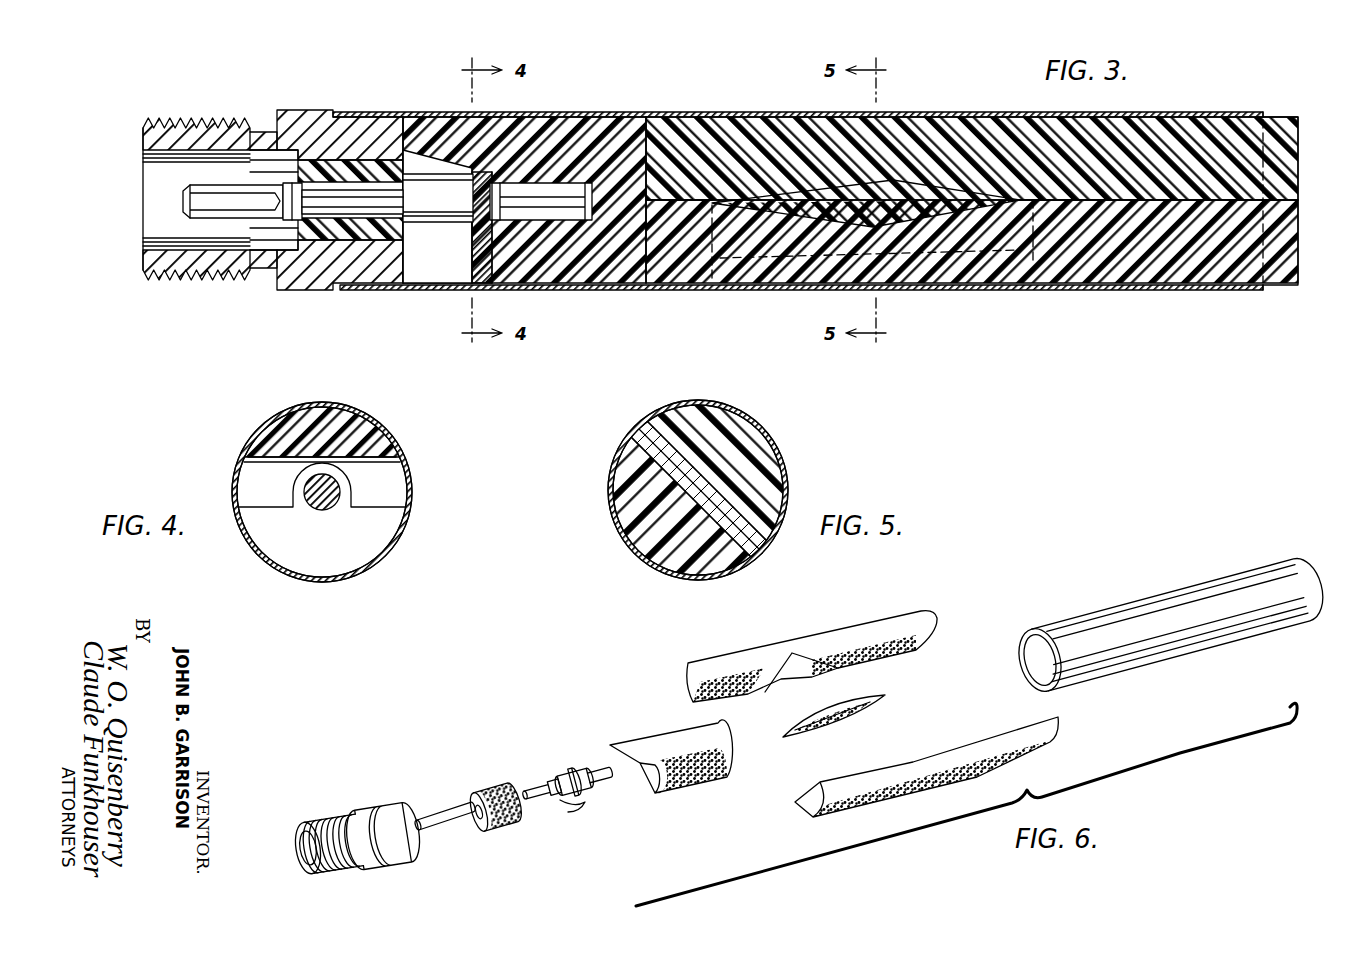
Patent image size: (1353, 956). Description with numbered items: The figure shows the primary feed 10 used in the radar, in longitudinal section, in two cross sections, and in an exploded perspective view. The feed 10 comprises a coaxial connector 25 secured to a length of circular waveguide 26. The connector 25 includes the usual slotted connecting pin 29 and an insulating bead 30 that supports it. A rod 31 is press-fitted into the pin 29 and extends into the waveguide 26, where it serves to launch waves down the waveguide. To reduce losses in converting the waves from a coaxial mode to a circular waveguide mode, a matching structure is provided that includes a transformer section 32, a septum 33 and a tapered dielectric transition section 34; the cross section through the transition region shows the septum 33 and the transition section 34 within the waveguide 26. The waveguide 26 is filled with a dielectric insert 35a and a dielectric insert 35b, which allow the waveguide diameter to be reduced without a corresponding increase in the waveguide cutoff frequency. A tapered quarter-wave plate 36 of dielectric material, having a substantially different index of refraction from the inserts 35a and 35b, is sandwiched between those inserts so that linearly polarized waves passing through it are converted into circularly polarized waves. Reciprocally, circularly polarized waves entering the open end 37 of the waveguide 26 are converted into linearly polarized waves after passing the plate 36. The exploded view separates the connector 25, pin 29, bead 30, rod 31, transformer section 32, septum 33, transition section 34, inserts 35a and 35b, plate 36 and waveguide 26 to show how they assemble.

In FIG. 3, the feed 10 is at (782, 312).
In FIG. 3, the coaxial connector 25 is at (248, 287).
In FIG. 6, the coaxial connector 25 is at (430, 797).
In FIG. 3, the circular waveguide 26 is at (690, 286).
In FIG. 4, the circular waveguide 26 is at (388, 432).
In FIG. 5, the circular waveguide 26 is at (652, 423).
In FIG. 6, the circular waveguide 26 is at (1142, 608).
In FIG. 3, the slotted connecting pin 29 is at (203, 219).
In FIG. 6, the slotted connecting pin 29 is at (458, 825).
In FIG. 3, the insulating bead 30 is at (326, 238).
In FIG. 6, the insulating bead 30 is at (501, 823).
In FIG. 3, the rod 31 is at (393, 195).
In FIG. 6, the rod 31 is at (547, 788).
In FIG. 3, the transformer section 32 is at (445, 214).
In FIG. 6, the transformer section 32 is at (565, 806).
In FIG. 3, the septum 33 is at (475, 266).
In FIG. 4, the septum 33 is at (362, 525).
In FIG. 6, the septum 33 is at (563, 778).
In FIG. 3, the tapered dielectric transition section 34 is at (566, 256).
In FIG. 4, the tapered dielectric transition section 34 is at (326, 419).
In FIG. 6, the tapered dielectric transition section 34 is at (684, 787).
In FIG. 3, the dielectric insert 35a is at (1090, 264).
In FIG. 5, the dielectric insert 35a is at (645, 546).
In FIG. 6, the dielectric insert 35a is at (1050, 726).
In FIG. 3, the dielectric insert 35b is at (913, 136).
In FIG. 5, the dielectric insert 35b is at (751, 445).
In FIG. 6, the dielectric insert 35b is at (855, 630).
In FIG. 3, the tapered quarter-wave plate 36 is at (907, 212).
In FIG. 5, the tapered quarter-wave plate 36 is at (770, 542).
In FIG. 6, the tapered quarter-wave plate 36 is at (868, 707).
In FIG. 3, the open end 37 is at (1298, 250).